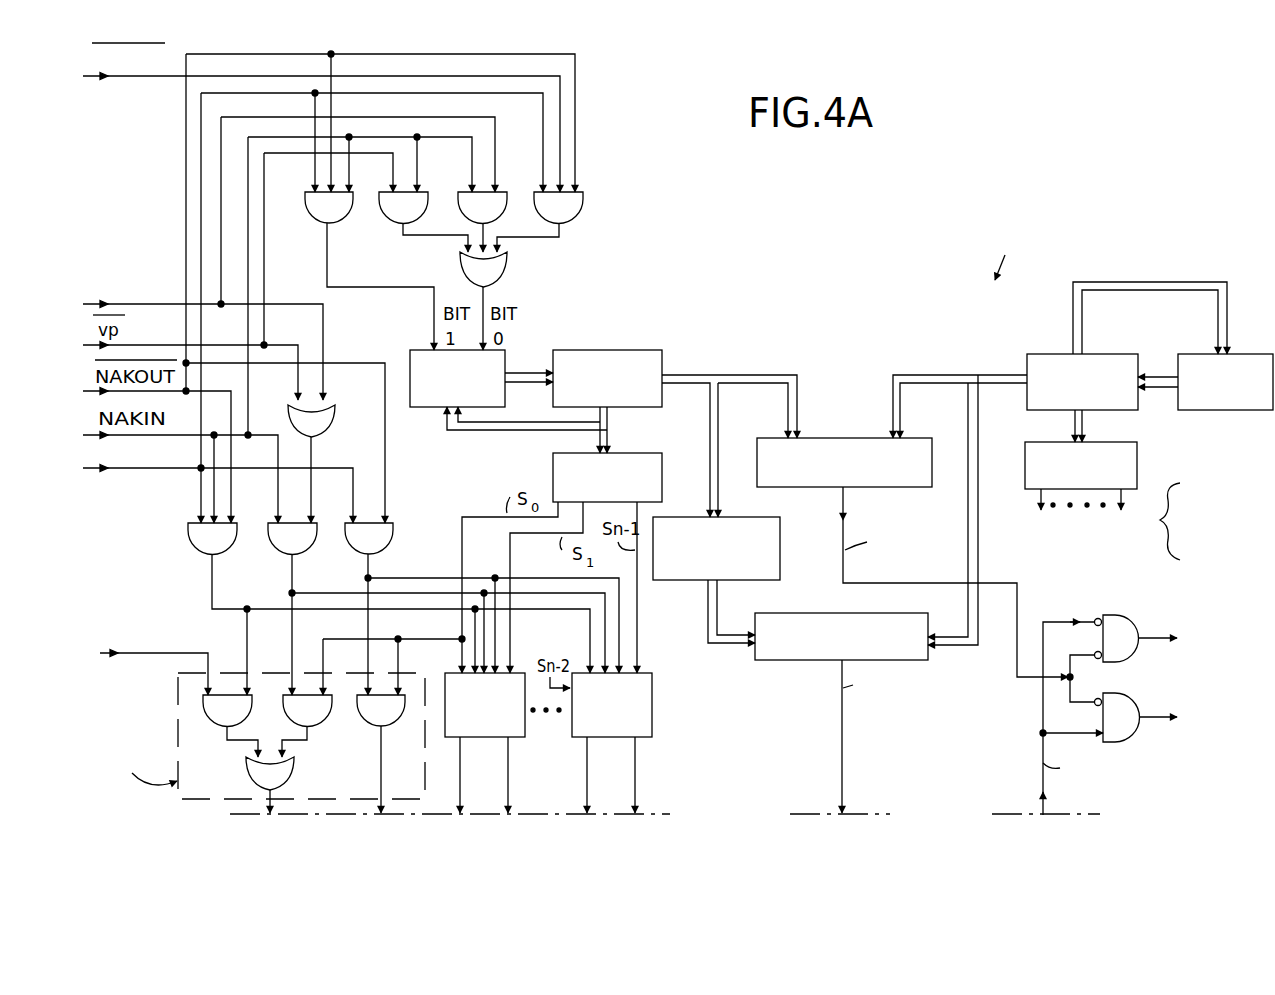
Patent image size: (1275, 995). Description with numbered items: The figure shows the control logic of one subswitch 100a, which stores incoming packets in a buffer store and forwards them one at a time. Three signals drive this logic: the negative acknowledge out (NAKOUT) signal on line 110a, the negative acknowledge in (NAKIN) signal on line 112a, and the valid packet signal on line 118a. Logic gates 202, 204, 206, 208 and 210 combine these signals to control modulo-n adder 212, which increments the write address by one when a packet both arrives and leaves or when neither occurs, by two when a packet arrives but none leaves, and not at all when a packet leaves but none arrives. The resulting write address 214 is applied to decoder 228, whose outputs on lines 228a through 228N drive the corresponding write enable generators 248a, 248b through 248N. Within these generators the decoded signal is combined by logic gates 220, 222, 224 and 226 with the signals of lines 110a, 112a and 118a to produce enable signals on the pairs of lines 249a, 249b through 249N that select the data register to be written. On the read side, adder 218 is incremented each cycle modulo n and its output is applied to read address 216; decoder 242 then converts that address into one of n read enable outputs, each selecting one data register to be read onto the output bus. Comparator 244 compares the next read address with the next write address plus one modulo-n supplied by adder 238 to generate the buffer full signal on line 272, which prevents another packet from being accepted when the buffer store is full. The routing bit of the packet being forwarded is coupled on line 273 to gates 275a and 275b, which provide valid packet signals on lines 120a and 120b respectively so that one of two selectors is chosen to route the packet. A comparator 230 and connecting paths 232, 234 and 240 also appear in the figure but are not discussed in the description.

The subswitch 100a is at (1003, 253).
The NAKOUT line 110a is at (85, 300).
The NAKIN line 112a is at (113, 80).
The valid packet signal line 118a is at (98, 472).
The logic gate 202 is at (313, 226).
The logic gate 204 is at (508, 262).
The logic gate 206 is at (390, 226).
The logic gate 208 is at (498, 190).
The logic gate 210 is at (584, 191).
The modulo-n adder 212 is at (508, 361).
The write address 214 is at (612, 348).
The read address 216 is at (1112, 353).
The modulo-n adder 218 is at (1248, 353).
The logic gate 220 is at (288, 418).
The logic gate 222 is at (195, 553).
The logic gate 224 is at (280, 556).
The logic gate 226 is at (393, 545).
The decoder 228 is at (638, 453).
The decoder output line 228a is at (475, 515).
The decoder output line 228N is at (108, 656).
The buffer empty comparator 230 is at (847, 437).
The read address bus 232 is at (915, 373).
The write address bus 234 is at (740, 373).
The adder 238 is at (782, 558).
The buffer full comparator 240 is at (883, 580).
The decoder 242 is at (1138, 457).
The comparator 244 is at (802, 660).
The write enable generator 248a is at (175, 698).
The write enable generator 248b is at (522, 673).
The write enable generator 248N is at (653, 713).
The pair of lines 249a is at (377, 805).
The pair of lines 249b is at (508, 805).
The pair of lines 249N is at (635, 805).
The buffer full line 272 is at (843, 770).
The routing bit line 273 is at (1042, 753).
The gate 275a is at (1175, 625).
The gate 275b is at (1175, 715).
The valid packet signal line 120a is at (1141, 643).
The valid packet signal line 120b is at (1135, 704).